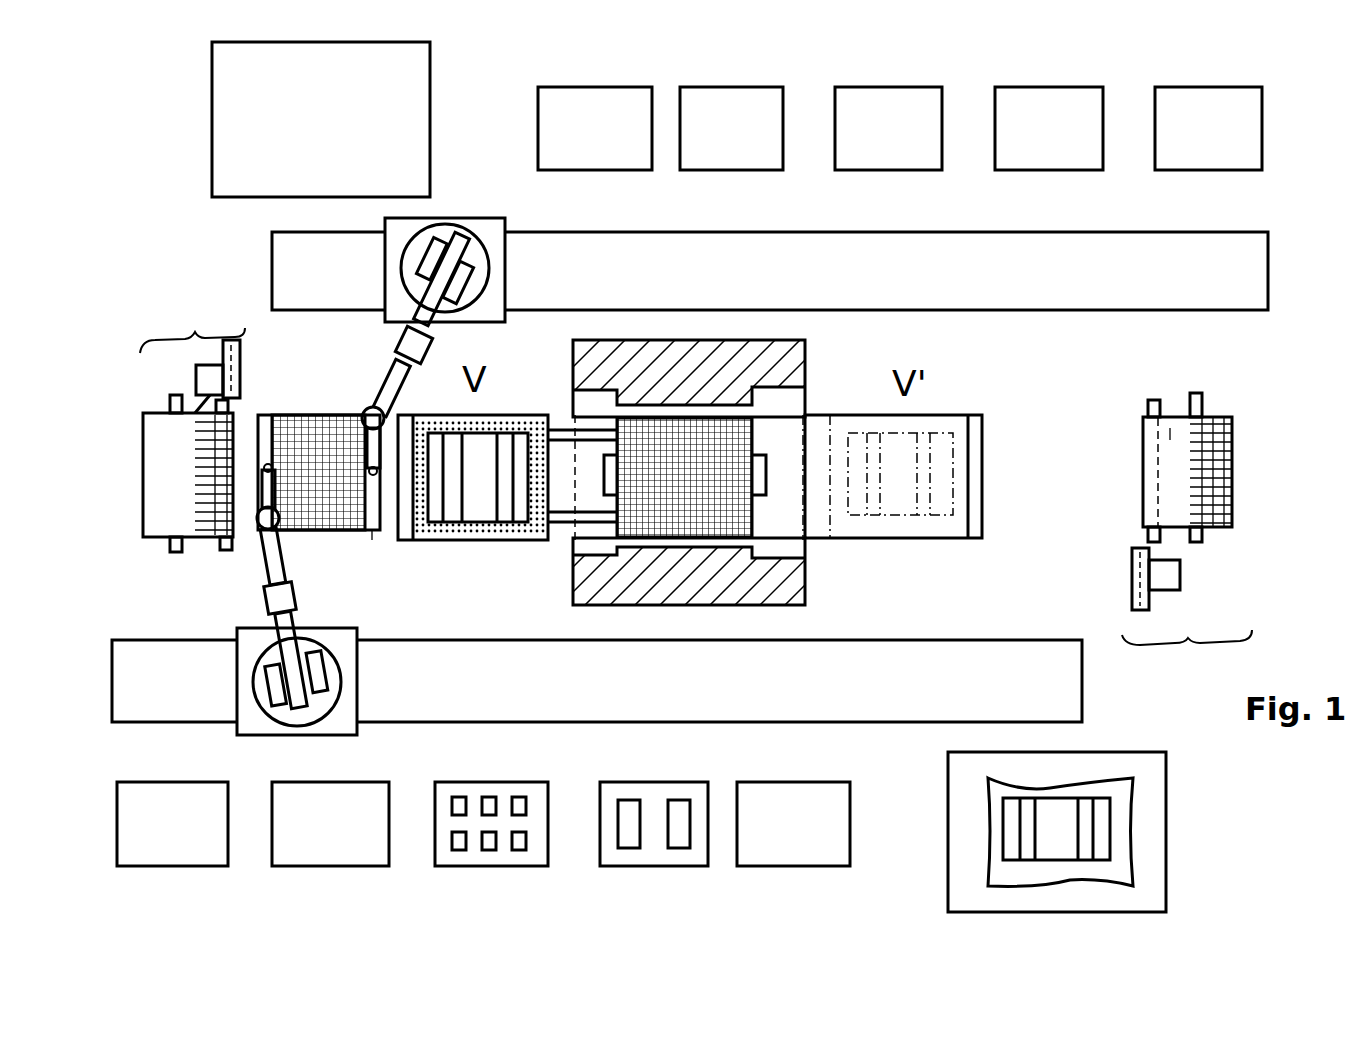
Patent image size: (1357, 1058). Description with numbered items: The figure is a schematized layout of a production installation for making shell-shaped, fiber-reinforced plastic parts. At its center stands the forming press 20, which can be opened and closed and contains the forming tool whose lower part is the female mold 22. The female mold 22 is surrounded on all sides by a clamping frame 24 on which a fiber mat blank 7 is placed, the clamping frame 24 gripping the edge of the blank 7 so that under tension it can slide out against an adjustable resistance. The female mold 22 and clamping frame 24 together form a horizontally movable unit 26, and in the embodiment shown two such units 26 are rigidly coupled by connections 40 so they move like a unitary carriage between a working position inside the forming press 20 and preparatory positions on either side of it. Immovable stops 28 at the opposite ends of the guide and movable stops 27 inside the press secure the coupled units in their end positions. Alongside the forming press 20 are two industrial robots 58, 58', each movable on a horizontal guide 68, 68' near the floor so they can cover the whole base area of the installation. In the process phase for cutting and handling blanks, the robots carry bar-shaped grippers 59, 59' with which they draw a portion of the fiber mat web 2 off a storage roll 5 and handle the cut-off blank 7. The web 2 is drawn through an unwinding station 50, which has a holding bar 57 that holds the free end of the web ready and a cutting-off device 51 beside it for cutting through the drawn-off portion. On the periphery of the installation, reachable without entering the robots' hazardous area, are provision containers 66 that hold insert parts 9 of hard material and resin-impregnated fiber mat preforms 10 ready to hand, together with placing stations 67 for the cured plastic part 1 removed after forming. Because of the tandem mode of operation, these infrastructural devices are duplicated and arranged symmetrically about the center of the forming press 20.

The cured plastic part 1 is at (1015, 830).
The fiber mat web 2 is at (205, 405).
The storage roll 5 is at (160, 480).
The blank 7 is at (652, 468).
The insert parts 9 is at (462, 797).
The preforms 10 is at (636, 800).
The forming press 20 is at (818, 372).
The female mold 22 is at (483, 450).
The clamping frame 24 is at (452, 540).
The unit 26 is at (502, 552).
The stop 27 is at (765, 475).
The stop 28 is at (410, 428).
The connections 40 is at (572, 510).
The unwinding station 50 is at (696, 491).
The cutting-off device 51 is at (243, 368).
The holding bar 57 is at (225, 550).
The industrial robot 58 is at (297, 599).
The industrial robot 58' is at (420, 346).
The bar-shaped gripper 59 is at (319, 448).
The bar-shaped gripper 59' is at (393, 566).
The provision containers 66 is at (630, 87).
The placing stations 67 is at (352, 144).
The horizontal guide 68 is at (597, 681).
The horizontal guide 68' is at (770, 271).